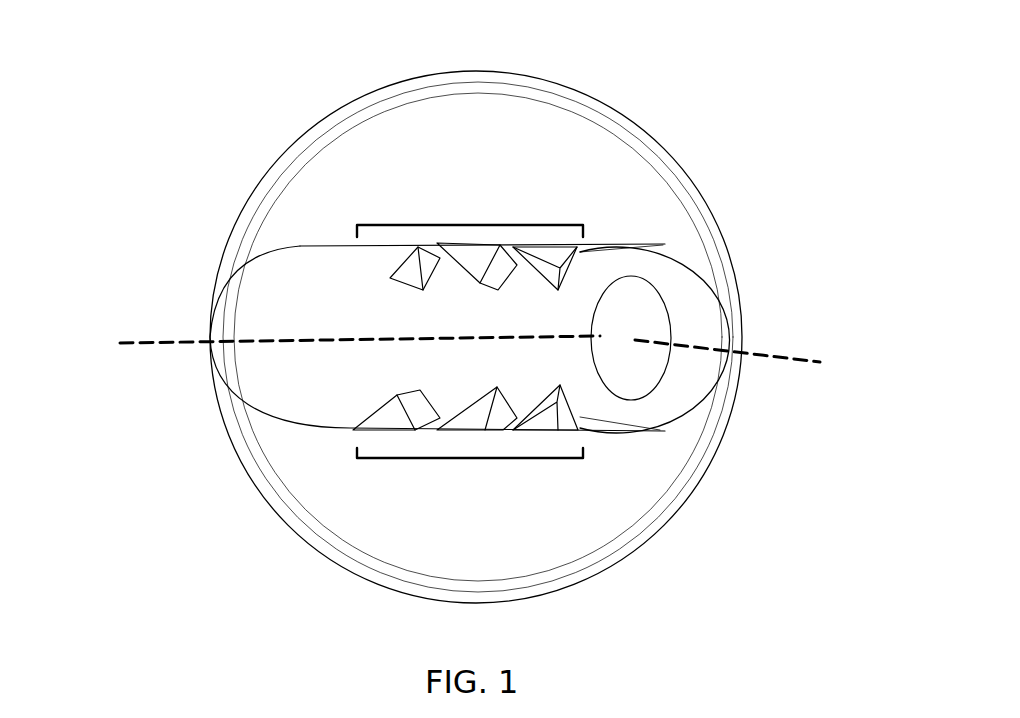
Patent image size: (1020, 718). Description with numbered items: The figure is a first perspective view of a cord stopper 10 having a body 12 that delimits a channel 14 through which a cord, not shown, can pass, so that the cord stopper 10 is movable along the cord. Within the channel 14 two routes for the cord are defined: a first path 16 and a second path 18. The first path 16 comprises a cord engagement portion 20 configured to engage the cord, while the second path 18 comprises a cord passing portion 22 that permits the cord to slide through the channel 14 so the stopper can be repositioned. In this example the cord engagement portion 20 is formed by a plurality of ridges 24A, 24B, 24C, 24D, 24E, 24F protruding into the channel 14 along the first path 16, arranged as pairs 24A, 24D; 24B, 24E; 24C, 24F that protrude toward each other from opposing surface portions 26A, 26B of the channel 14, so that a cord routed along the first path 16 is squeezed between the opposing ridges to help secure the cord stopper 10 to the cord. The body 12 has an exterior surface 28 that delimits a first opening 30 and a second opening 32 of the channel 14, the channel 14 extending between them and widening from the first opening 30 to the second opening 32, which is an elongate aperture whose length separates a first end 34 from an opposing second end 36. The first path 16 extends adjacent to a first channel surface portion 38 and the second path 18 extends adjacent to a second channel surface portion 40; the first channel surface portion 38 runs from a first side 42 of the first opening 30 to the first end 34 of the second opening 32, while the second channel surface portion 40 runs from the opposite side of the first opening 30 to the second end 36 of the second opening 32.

The cord stopper 10 is at (128, 174).
The body 12 is at (465, 115).
The channel 14 is at (295, 378).
The first path 16 is at (172, 343).
The second path 18 is at (760, 353).
The cord engagement portion 20 is at (450, 223).
The cord passing portion 22 is at (688, 290).
The ridge 24A is at (553, 263).
The ridge 24B is at (473, 258).
The ridge 24C is at (382, 262).
The ridge 24D is at (578, 417).
The ridge 24E is at (468, 417).
The ridge 24F is at (392, 418).
The opposing surface portion 26A is at (600, 250).
The opposing surface portion 26B is at (605, 425).
The exterior surface 28 is at (583, 92).
The first opening 30 is at (638, 370).
The second opening 32 is at (280, 287).
The first end 34 is at (210, 313).
The second end 36 is at (728, 323).
The first channel surface portion 38 is at (317, 397).
The second channel surface portion 40 is at (687, 380).
The first side 42 is at (600, 336).